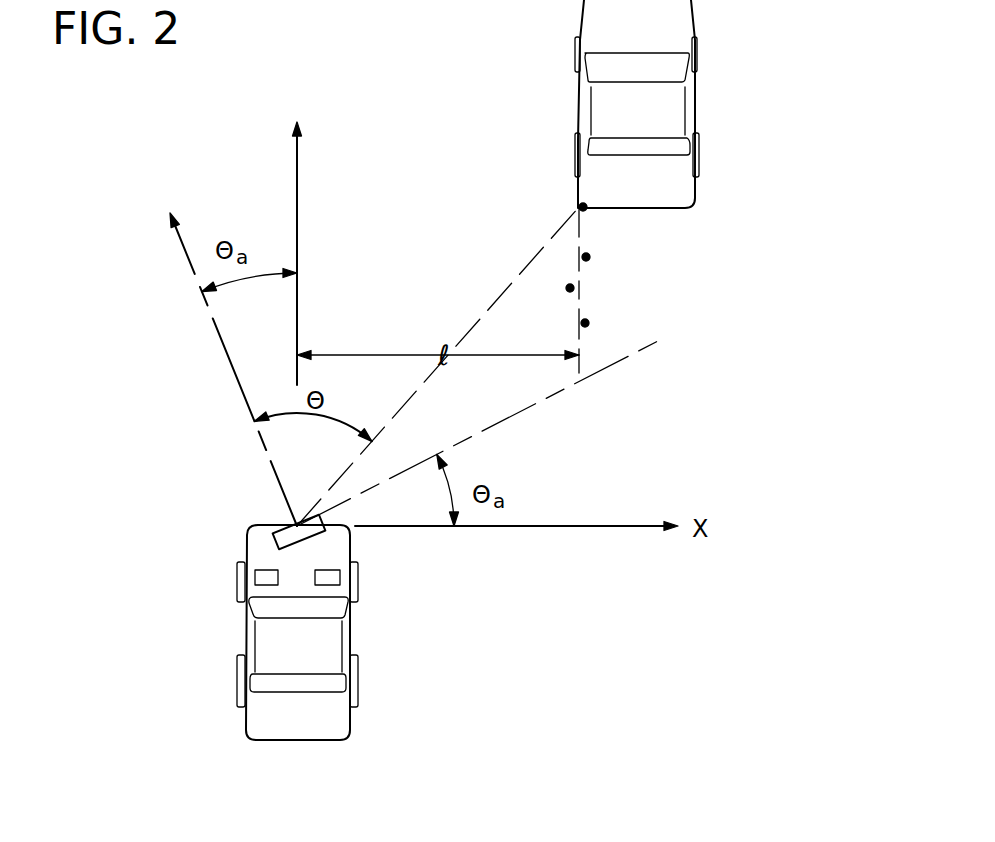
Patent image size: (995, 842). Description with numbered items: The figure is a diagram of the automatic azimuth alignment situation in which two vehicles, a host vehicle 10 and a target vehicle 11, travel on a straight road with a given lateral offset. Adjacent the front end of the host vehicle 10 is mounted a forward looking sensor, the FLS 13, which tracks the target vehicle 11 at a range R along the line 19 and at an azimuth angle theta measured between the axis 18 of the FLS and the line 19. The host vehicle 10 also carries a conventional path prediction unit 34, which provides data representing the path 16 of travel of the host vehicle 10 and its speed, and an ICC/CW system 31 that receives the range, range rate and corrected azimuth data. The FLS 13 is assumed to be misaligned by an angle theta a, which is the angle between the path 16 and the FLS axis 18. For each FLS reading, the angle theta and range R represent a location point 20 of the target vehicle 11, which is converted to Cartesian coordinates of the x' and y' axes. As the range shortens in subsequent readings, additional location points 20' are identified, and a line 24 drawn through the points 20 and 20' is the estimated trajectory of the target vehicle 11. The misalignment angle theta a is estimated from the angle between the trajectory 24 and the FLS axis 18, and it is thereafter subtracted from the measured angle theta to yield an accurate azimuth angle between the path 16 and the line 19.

The host vehicle 10 is at (214, 694).
The target vehicle 11 is at (712, 102).
The FLS 13 is at (278, 543).
The path 16 is at (297, 170).
The axis of the FLS 18 is at (234, 372).
The line 19 is at (512, 282).
The location point 20 is at (604, 222).
The additional location points 20' is at (613, 290).
The line 24 is at (583, 362).
The ICC/CW system 31 is at (255, 580).
The path prediction unit 34 is at (340, 580).